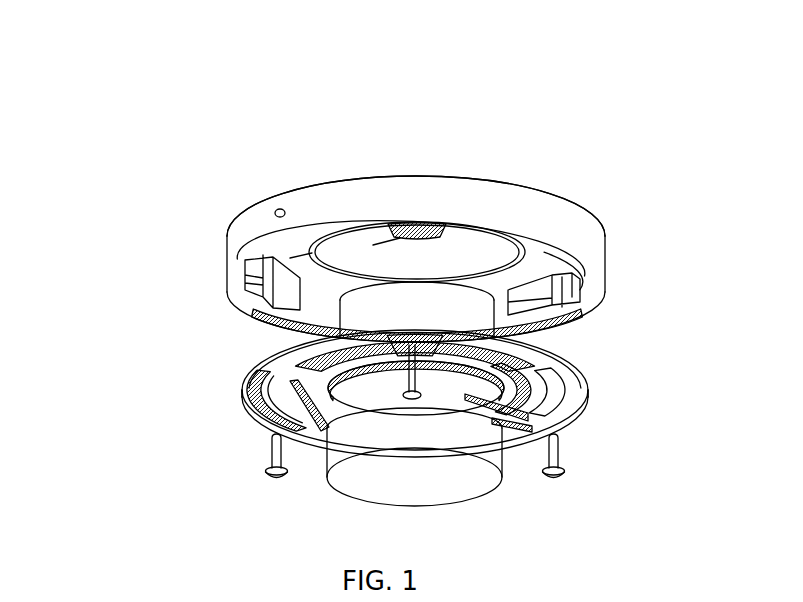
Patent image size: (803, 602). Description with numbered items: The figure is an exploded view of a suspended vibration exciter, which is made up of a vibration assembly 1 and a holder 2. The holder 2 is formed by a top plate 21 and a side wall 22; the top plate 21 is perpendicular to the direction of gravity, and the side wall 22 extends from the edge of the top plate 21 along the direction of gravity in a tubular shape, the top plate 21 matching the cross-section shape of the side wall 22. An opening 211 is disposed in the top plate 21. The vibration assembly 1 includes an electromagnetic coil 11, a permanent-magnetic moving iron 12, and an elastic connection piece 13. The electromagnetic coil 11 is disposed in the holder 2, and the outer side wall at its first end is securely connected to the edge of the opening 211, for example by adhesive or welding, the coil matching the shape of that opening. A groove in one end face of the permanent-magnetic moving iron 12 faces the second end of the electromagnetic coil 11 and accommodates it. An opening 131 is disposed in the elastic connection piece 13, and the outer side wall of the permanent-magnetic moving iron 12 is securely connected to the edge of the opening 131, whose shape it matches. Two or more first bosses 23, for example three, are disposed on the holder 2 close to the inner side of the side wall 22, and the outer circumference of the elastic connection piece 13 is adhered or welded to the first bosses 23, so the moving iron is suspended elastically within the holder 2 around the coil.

The vibration assembly 1 is at (108, 330).
The holder 2 is at (360, 78).
The electromagnetic coil 11 is at (383, 304).
The permanent-magnetic moving iron 12 is at (355, 487).
The elastic connection piece 13 is at (250, 400).
The opening 131 is at (560, 404).
The top plate 21 is at (332, 226).
The opening 211 is at (407, 227).
The side wall 22 is at (243, 243).
The first bosses 23 is at (500, 342).